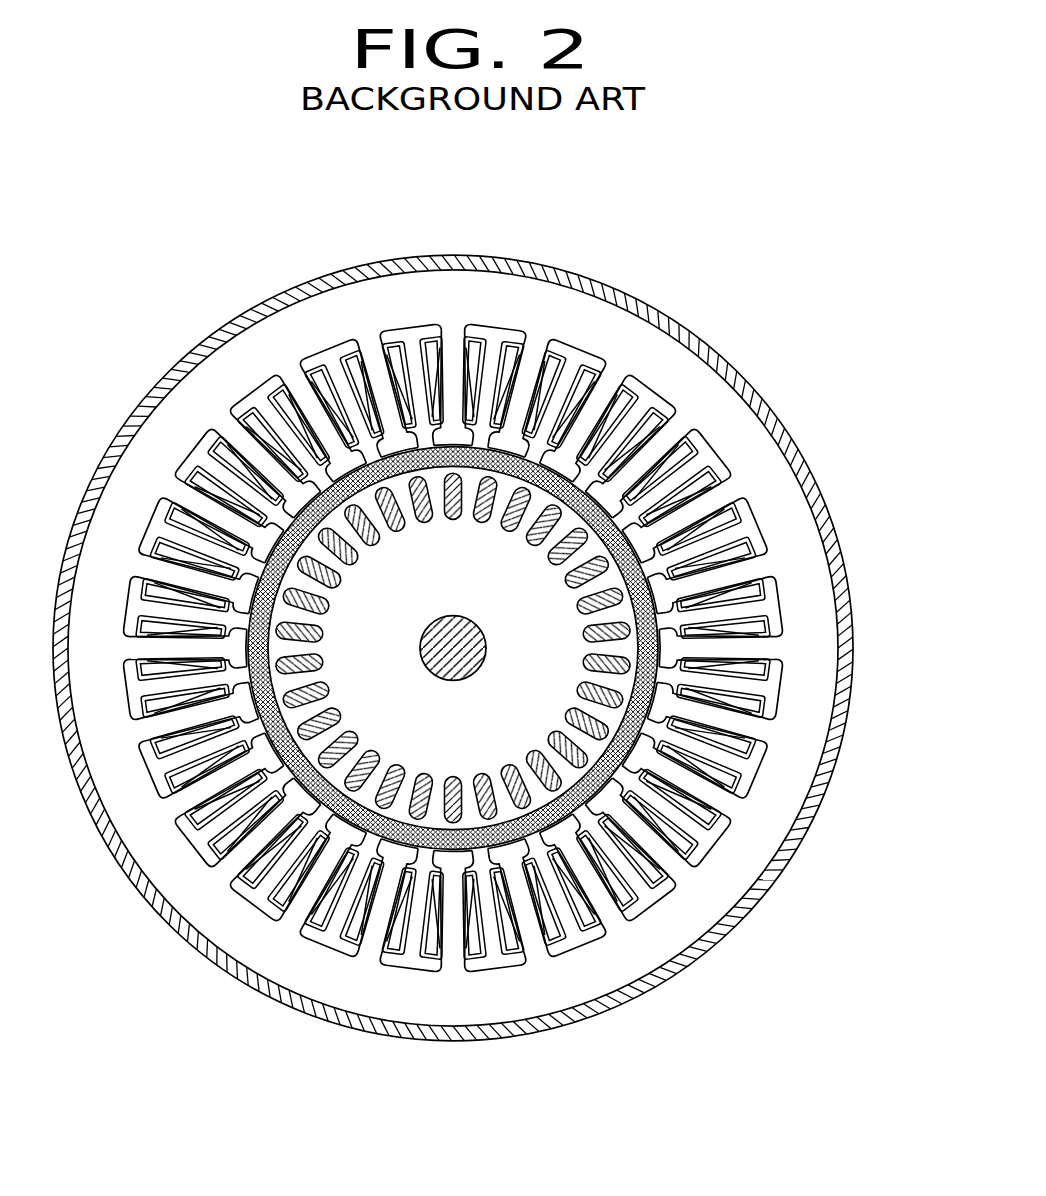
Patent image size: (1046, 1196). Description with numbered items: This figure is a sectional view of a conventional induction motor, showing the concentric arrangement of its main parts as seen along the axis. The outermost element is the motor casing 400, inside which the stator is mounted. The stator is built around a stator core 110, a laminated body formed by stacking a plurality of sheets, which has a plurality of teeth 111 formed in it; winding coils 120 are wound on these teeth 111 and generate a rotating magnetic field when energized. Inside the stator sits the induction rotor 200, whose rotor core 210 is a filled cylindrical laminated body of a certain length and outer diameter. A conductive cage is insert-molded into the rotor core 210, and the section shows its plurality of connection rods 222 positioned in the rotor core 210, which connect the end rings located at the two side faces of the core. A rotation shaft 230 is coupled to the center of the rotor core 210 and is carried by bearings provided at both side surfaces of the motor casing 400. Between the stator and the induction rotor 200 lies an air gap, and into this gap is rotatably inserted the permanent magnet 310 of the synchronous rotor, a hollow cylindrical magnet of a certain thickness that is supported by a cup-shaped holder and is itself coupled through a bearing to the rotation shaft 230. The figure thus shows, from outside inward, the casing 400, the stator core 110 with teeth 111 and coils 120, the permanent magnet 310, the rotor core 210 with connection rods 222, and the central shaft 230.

The stator core 110 is at (775, 820).
The teeth 111 is at (527, 367).
The winding coils 120 is at (672, 889).
The induction rotor 200 is at (655, 700).
The rotor core 210 is at (543, 613).
The connection rods 222 is at (577, 469).
The rotation shaft 230 is at (467, 646).
The permanent magnet 310 is at (603, 515).
The motor casing 400 is at (838, 489).